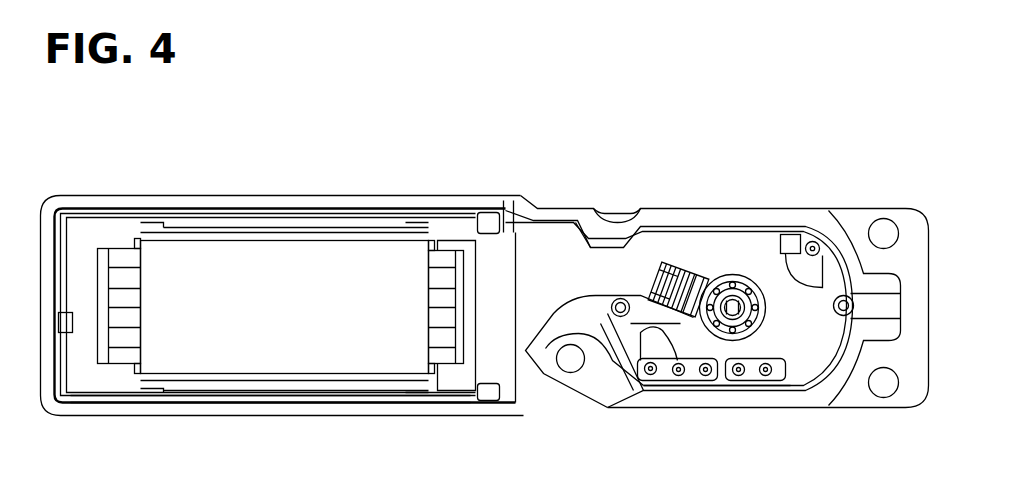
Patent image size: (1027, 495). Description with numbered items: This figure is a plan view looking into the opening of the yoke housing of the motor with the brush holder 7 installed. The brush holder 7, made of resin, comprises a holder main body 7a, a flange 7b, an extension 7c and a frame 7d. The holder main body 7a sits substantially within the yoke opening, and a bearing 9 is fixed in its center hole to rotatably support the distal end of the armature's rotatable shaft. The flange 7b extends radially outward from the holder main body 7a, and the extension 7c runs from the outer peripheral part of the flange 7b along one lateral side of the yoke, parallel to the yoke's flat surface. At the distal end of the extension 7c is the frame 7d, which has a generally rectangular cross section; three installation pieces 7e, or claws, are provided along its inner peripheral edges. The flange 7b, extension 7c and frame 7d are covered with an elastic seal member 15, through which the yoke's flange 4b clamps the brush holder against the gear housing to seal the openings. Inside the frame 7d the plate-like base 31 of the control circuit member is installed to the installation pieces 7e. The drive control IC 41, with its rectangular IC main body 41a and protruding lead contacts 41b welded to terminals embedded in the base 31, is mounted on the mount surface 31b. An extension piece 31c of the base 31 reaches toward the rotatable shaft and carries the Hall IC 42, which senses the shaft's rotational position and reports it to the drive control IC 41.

The flange 4b is at (864, 212).
The brush holder 7 is at (846, 212).
The holder main body 7a is at (742, 244).
The flange 7b is at (702, 404).
The extension 7c is at (563, 211).
The frame 7d is at (140, 410).
The installation pieces 7e is at (72, 322).
The bearing 9 is at (758, 306).
The seal member 15 is at (258, 410).
The base 31 is at (514, 217).
The mount surface 31b is at (372, 229).
The extension piece 31c is at (609, 255).
The drive control IC 41 is at (313, 239).
The IC main body 41a is at (262, 249).
The lead contacts 41b is at (118, 257).
The Hall IC 42 is at (690, 283).